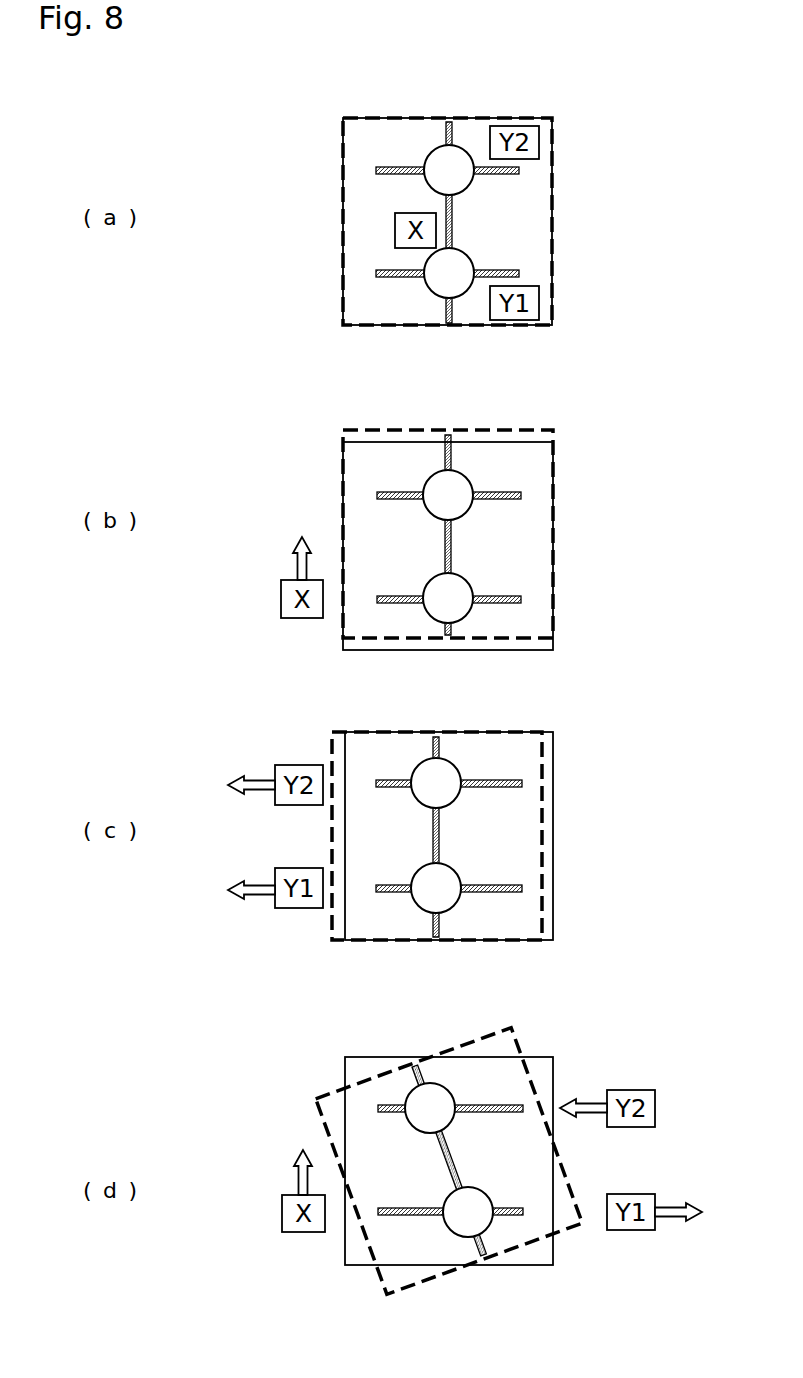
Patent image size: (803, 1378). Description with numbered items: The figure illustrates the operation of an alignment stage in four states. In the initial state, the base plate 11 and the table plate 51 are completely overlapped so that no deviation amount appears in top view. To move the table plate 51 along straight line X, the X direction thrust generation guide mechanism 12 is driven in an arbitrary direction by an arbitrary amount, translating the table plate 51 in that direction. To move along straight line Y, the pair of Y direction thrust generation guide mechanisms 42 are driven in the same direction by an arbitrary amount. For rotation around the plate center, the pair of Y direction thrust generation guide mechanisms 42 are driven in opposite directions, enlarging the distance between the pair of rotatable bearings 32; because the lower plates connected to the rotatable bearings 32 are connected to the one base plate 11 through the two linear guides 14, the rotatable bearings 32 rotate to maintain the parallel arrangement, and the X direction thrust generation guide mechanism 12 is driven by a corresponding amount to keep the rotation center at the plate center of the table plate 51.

The base plate 11 is at (525, 207).
The X direction thrust generation guide mechanism 12 is at (453, 310).
The linear guide 14 is at (453, 137).
The rotatable bearing 32 is at (432, 147).
The Y direction thrust generation guide mechanism 42 is at (395, 167).
The table plate 51 is at (557, 237).